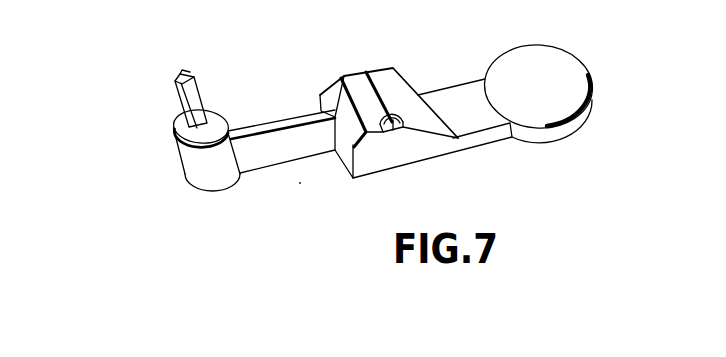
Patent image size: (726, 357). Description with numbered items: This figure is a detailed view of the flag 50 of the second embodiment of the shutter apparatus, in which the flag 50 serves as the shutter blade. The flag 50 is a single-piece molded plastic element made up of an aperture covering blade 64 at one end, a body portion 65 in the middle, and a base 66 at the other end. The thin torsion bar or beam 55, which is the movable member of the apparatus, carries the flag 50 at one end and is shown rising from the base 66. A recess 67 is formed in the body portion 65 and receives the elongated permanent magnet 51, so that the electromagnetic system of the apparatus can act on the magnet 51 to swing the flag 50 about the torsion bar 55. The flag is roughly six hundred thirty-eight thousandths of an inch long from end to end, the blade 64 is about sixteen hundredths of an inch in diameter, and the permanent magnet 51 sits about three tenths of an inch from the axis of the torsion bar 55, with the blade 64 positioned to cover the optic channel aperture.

The flag 50 is at (619, 115).
The permanent magnet 51 is at (374, 83).
The torsion bar 55 is at (187, 74).
The aperture covering blade 64 is at (536, 99).
The body portion 65 is at (403, 153).
The base 66 is at (227, 177).
The recess 67 is at (398, 113).